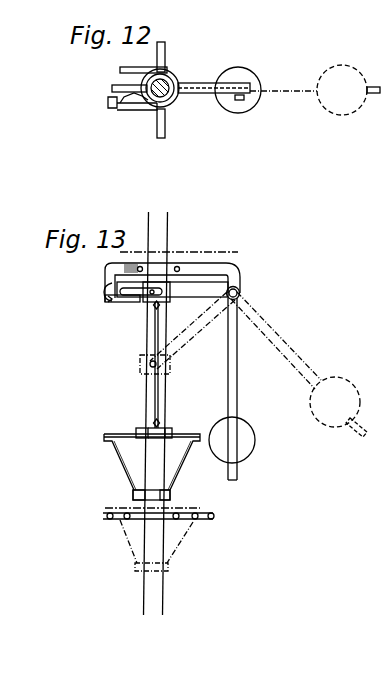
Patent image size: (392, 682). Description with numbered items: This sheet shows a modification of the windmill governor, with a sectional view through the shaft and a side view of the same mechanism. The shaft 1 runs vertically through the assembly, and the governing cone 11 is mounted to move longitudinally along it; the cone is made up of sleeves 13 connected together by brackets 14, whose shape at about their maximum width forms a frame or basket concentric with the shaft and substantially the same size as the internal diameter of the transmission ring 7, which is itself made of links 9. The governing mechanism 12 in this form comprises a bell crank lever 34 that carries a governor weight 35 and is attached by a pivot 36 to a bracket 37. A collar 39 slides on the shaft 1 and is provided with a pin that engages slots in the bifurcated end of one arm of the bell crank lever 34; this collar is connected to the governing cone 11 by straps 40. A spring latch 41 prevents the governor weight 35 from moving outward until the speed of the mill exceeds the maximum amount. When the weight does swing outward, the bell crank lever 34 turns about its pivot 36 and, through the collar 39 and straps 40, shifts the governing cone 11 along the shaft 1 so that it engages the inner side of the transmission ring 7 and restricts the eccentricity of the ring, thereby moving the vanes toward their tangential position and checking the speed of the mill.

In FIG. 12, the shaft 1 is at (167, 78).
In FIG. 13, the shaft 1 is at (168, 214).
In FIG. 13, the transmission ring 7 is at (200, 522).
In FIG. 13, the links 9 is at (156, 545).
In FIG. 13, the governing cone 11 is at (152, 462).
In FIG. 12, the governing mechanism 12 is at (205, 115).
In FIG. 13, the governing mechanism 12 is at (214, 345).
In FIG. 13, the sleeves 13 is at (170, 428).
In FIG. 12, the brackets 14 is at (157, 53).
In FIG. 12, the bell crank lever 34 is at (202, 83).
In FIG. 13, the bell crank lever 34 is at (272, 395).
In FIG. 12, the governor weight 35 is at (245, 87).
In FIG. 13, the governor weight 35 is at (241, 440).
In FIG. 12, the pivot 36 is at (244, 99).
In FIG. 13, the pivot 36 is at (240, 289).
In FIG. 12, the bracket 37 is at (178, 84).
In FIG. 13, the bracket 37 is at (181, 264).
In FIG. 12, the collar 39 is at (132, 87).
In FIG. 13, the collar 39 is at (174, 285).
In FIG. 13, the straps 40 is at (159, 315).
In FIG. 12, the spring latch 41 is at (133, 108).
In FIG. 13, the spring latch 41 is at (110, 303).